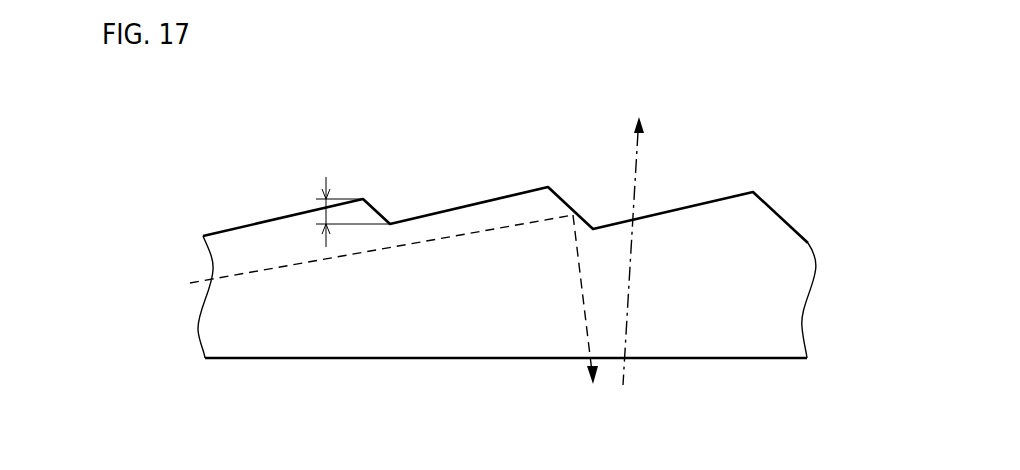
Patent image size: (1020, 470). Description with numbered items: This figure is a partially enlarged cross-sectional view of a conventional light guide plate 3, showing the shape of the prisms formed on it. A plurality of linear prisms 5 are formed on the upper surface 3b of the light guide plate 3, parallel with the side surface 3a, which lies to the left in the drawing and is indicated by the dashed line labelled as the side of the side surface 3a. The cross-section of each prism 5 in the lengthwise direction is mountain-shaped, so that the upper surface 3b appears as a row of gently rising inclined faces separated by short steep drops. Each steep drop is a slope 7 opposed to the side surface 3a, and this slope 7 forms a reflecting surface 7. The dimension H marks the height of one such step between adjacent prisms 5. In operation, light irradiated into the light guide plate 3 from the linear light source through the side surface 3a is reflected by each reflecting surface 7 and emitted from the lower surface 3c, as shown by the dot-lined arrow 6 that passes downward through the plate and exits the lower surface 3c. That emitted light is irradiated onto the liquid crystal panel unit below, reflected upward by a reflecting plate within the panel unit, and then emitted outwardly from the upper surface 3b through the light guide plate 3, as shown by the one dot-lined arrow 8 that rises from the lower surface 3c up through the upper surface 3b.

The light guide plate 3 is at (498, 103).
The side surface 3a is at (319, 260).
The upper surface 3b is at (685, 191).
The lower surface 3c is at (528, 360).
The linear prism 5 is at (268, 221).
The dot-lined arrow 6 is at (582, 283).
The reflecting surface 7 is at (377, 208).
The one dot-lined arrow 8 is at (632, 282).
The step height H is at (345, 211).